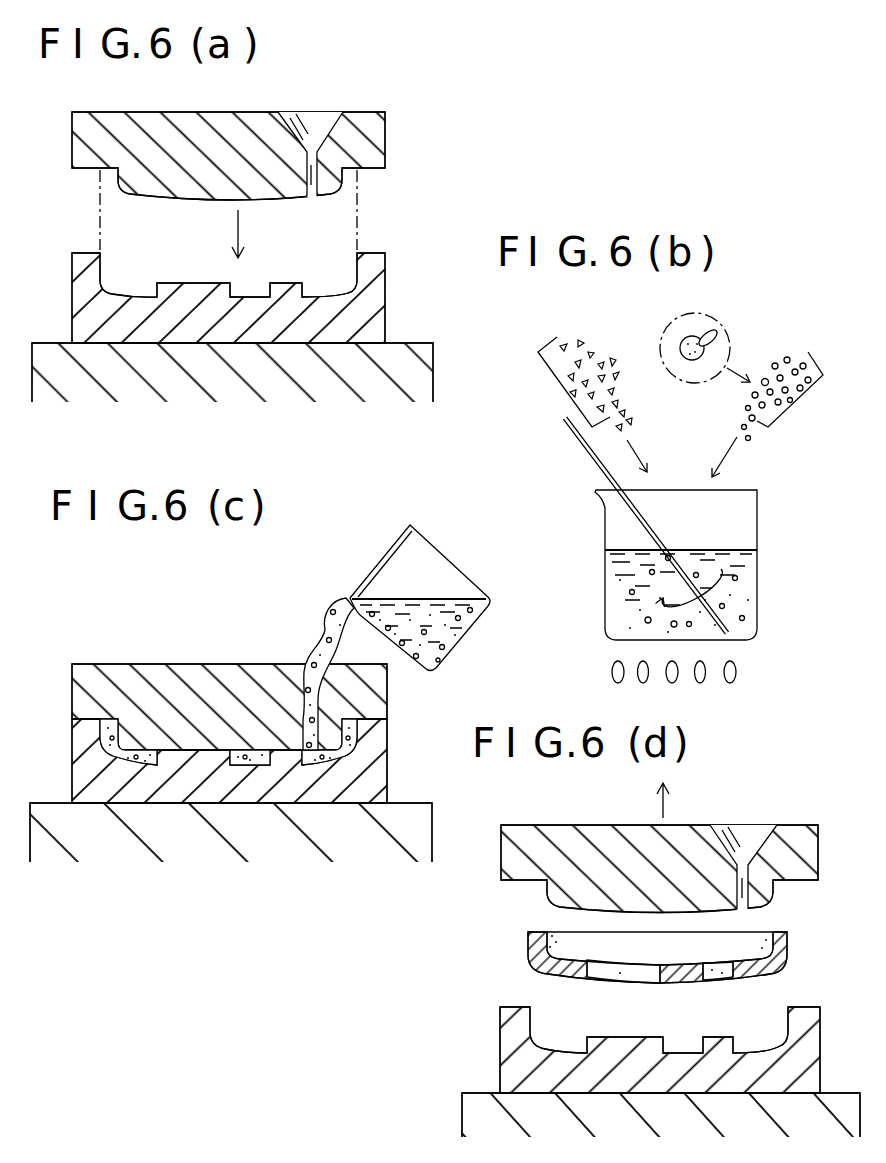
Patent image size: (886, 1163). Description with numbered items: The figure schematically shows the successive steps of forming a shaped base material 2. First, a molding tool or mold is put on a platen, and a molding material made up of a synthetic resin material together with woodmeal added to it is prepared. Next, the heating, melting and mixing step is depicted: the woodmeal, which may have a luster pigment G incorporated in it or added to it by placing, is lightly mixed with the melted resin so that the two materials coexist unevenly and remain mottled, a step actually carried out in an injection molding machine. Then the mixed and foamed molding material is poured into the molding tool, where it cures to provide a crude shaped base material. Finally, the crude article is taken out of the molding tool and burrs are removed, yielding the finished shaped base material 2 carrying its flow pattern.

The luster pigment G is at (712, 337).
The shaped base material 2 is at (483, 947).